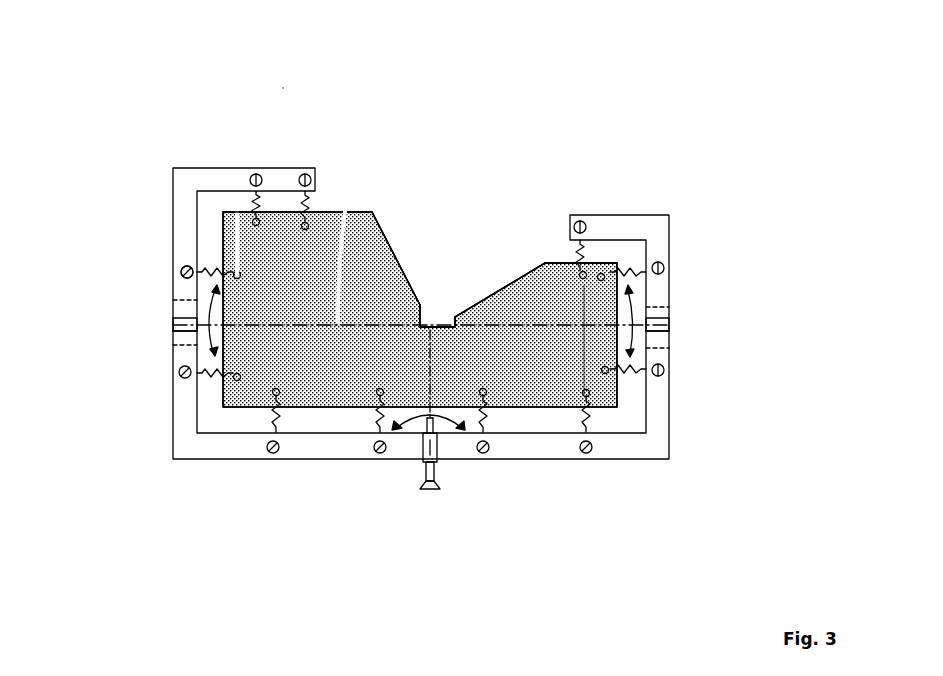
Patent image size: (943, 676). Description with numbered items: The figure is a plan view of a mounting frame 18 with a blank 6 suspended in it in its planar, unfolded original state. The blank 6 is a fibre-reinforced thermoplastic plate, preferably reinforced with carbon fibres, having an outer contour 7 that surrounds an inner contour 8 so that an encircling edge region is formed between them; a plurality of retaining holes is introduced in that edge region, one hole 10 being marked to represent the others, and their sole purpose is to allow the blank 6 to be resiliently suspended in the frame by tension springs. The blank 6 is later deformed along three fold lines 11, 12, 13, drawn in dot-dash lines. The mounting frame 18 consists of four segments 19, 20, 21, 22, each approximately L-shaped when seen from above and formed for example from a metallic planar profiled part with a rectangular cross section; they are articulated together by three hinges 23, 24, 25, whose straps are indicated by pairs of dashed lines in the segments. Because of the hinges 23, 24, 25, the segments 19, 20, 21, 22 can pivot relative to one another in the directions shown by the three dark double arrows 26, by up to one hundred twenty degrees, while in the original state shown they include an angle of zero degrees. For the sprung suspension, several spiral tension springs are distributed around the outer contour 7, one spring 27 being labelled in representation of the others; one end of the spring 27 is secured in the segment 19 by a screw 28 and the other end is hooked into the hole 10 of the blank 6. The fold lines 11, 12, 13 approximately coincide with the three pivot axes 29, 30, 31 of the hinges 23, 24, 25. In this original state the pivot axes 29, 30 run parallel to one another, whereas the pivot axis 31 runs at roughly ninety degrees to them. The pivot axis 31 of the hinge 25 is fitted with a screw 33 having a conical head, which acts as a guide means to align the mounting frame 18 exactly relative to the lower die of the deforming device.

The mounting frame 18 is at (280, 93).
The blank 6 is at (326, 410).
The outer contour 7 is at (544, 262).
The inner contour 8 is at (518, 290).
The retaining hole 10 is at (237, 272).
The fold line 11 is at (338, 322).
The fold line 12 is at (477, 322).
The fold line 13 is at (414, 300).
The segment 19 is at (185, 186).
The segment 20 is at (182, 440).
The segment 21 is at (633, 452).
The segment 22 is at (640, 230).
The hinge 23 is at (177, 333).
The hinge 24 is at (672, 320).
The hinge 25 is at (437, 462).
The double arrow 26 is at (208, 295).
The tension spring 27 is at (212, 265).
The screw 28 is at (181, 270).
The pivot axis 29 is at (173, 322).
The pivot axis 30 is at (672, 333).
The pivot axis 31 is at (433, 463).
The screw 33 is at (426, 468).